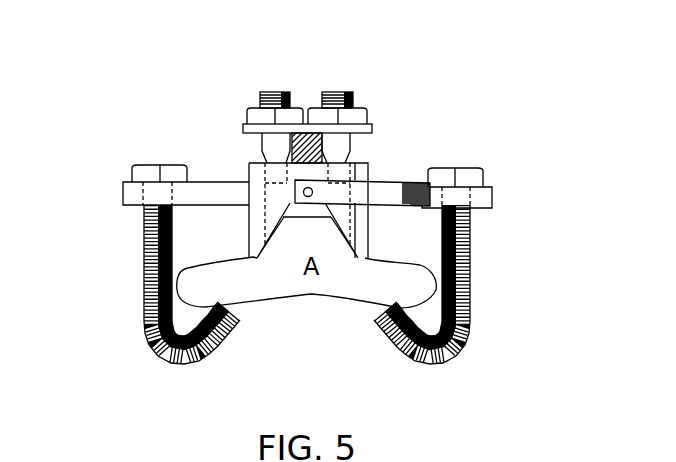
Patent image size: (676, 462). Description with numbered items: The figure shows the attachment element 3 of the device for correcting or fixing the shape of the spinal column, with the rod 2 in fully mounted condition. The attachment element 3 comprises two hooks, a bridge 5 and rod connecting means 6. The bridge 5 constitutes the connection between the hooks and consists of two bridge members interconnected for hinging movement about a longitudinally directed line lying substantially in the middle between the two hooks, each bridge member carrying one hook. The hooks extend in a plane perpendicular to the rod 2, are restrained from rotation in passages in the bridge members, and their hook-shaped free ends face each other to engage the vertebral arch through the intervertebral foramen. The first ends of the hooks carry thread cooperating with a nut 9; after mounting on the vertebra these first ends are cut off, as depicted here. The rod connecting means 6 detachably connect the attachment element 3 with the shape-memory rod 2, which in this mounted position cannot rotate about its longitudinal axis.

The rod 2 is at (292, 151).
The attachment element 3 is at (470, 130).
The bridge 5 is at (243, 210).
The rod connecting means 6 is at (362, 150).
The nut 9 is at (135, 177).